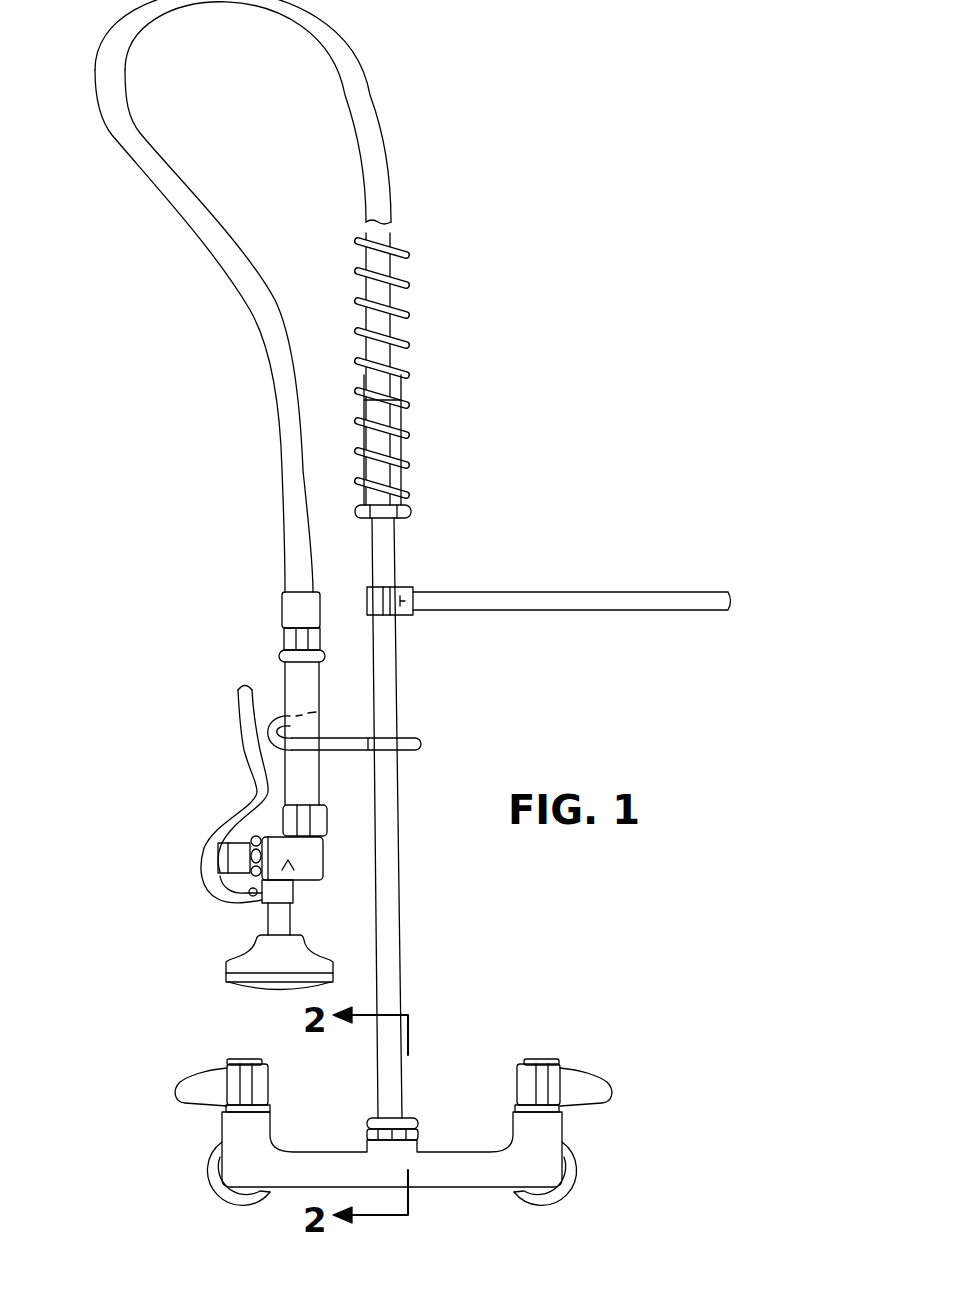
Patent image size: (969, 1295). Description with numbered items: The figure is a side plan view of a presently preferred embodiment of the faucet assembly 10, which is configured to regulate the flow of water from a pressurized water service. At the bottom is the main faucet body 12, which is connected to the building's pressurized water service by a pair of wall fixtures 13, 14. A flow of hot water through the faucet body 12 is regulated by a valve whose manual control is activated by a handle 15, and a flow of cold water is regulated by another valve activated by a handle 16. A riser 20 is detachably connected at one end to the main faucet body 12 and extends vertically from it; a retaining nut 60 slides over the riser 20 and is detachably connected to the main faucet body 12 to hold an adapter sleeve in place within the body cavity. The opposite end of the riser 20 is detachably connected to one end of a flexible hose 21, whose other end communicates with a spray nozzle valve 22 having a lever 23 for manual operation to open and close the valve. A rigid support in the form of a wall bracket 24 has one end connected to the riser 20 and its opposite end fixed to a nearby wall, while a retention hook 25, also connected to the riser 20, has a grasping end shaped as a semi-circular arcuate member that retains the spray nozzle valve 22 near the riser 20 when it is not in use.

The faucet assembly 10 is at (532, 151).
The main faucet body 12 is at (441, 1165).
The wall fixture 13 is at (212, 1178).
The wall fixture 14 is at (580, 1170).
The handle 15 is at (203, 1083).
The handle 16 is at (583, 1082).
The riser 20 is at (400, 880).
The flexible hose 21 is at (392, 135).
The spray nozzle valve 22 is at (299, 857).
The lever 23 is at (248, 757).
The wall bracket 24 is at (610, 592).
The retention hook 25 is at (350, 735).
The retaining nut 60 is at (367, 1124).